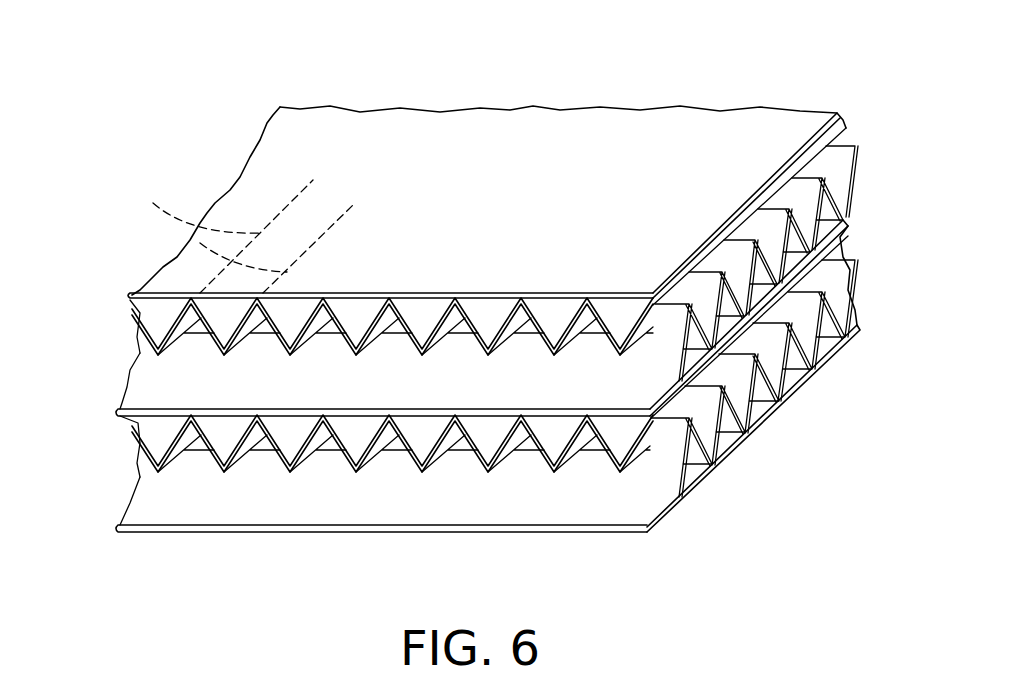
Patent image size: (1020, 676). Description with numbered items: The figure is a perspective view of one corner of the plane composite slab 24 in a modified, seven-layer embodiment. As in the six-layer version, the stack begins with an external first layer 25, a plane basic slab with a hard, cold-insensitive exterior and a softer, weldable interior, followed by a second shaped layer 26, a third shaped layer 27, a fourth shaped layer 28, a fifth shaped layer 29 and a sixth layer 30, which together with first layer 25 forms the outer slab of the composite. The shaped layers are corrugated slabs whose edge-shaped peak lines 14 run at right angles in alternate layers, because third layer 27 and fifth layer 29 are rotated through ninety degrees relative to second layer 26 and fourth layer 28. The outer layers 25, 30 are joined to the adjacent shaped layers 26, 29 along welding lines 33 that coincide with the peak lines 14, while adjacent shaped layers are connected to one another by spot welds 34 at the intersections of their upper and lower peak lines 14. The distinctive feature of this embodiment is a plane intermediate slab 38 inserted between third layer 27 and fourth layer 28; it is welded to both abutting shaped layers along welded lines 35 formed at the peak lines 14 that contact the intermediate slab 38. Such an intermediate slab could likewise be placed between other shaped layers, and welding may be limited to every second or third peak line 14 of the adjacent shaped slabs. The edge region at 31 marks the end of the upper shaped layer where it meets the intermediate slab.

The composite slab 24 is at (533, 92).
The external first layer 25 is at (130, 297).
The second shaped layer 26 is at (150, 322).
The third shaped layer 27 is at (147, 373).
The intermediate slab 38 is at (118, 412).
The fourth shaped layer 28 is at (137, 438).
The fifth shaped layer 29 is at (142, 488).
The sixth layer 30 is at (120, 527).
The edge of corrugated core 31 is at (845, 210).
The welding lines 33 is at (153, 206).
The spot welds 34 is at (313, 450).
The welded lines 35 is at (822, 282).
The peak lines 14 is at (532, 315).